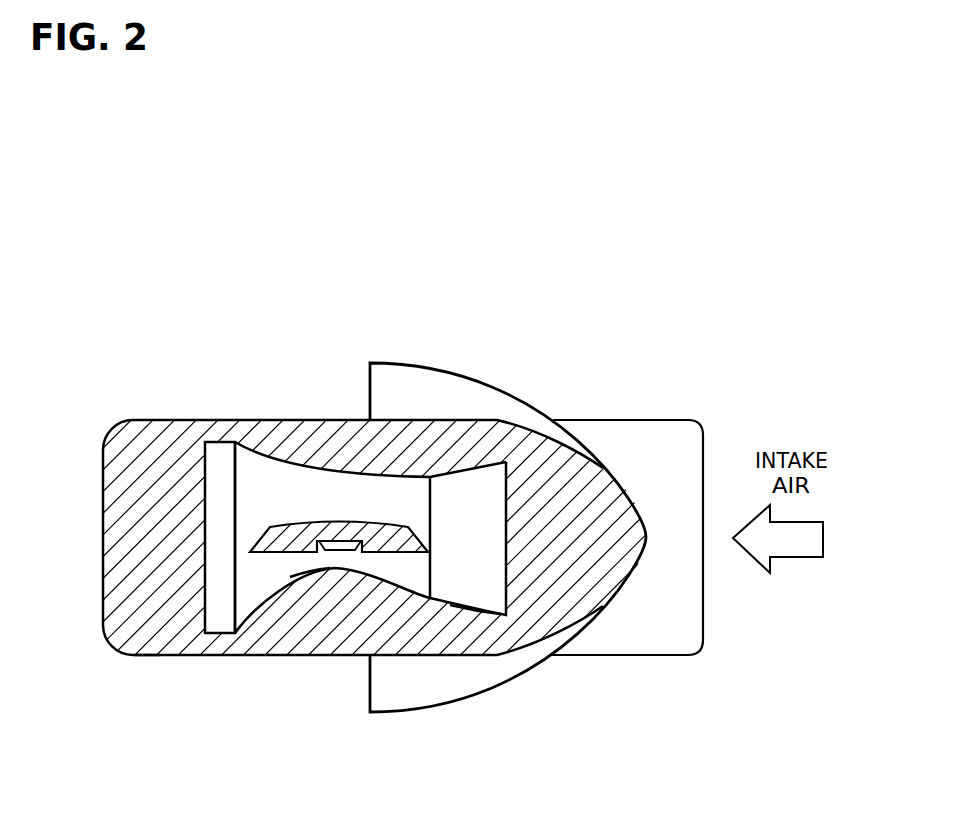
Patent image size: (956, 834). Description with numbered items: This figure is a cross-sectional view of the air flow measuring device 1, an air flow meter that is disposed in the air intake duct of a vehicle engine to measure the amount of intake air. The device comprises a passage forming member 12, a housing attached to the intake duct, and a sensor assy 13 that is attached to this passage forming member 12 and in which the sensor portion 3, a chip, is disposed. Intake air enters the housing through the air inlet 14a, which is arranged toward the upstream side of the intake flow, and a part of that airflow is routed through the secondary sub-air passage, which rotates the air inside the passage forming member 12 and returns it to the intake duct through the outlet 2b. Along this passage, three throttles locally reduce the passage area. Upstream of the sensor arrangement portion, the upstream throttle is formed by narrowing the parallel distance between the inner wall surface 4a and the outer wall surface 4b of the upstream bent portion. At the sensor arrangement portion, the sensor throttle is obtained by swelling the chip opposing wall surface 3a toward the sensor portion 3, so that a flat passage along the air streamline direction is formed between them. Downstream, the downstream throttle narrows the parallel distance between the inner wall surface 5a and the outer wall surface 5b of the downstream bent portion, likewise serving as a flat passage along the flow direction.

The air flow measuring device 1 is at (627, 377).
The outlet 2b is at (369, 385).
The sensor portion 3 is at (335, 545).
The chip opposing wall surface 3a is at (340, 572).
The inner wall surface 4a is at (235, 467).
The outer wall surface 4b is at (207, 480).
The inner wall surface 5a is at (430, 490).
The outer wall surface 5b is at (505, 507).
The passage forming member 12 is at (115, 497).
The sensor assy 13 is at (288, 527).
The air inlet 14a is at (703, 572).